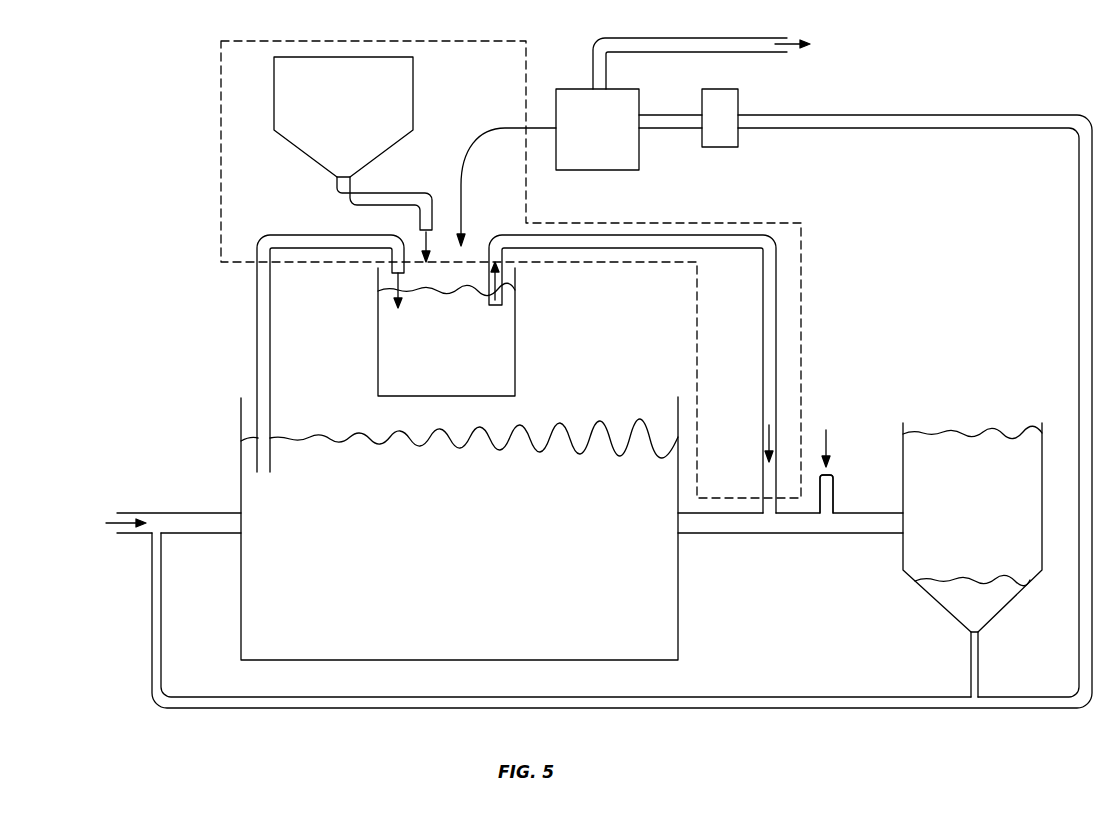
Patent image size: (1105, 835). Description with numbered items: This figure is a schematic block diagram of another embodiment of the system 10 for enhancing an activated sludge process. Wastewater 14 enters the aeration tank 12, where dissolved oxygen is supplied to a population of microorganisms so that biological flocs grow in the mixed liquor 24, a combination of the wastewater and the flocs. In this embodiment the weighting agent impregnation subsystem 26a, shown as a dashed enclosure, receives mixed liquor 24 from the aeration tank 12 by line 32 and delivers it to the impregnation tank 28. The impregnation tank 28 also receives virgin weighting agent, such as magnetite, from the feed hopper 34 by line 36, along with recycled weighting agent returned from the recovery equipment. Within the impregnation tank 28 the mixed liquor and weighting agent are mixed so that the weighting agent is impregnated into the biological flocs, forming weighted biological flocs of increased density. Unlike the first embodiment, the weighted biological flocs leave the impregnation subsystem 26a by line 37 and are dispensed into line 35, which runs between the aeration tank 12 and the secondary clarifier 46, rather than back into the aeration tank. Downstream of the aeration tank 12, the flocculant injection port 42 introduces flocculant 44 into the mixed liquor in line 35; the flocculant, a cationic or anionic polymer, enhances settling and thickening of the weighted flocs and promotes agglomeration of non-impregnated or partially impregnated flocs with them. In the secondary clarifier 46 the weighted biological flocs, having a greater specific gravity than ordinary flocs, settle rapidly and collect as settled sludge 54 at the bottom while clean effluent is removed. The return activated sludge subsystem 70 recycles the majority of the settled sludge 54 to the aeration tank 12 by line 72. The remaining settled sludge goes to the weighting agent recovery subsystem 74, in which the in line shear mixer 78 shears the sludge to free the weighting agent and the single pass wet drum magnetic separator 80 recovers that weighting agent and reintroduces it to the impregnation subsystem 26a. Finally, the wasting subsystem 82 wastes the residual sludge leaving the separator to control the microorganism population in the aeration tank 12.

The system for enhancing an activated sludge process 10 is at (1033, 76).
The aeration tank 12 is at (679, 573).
The wastewater 14 is at (135, 509).
The mixed liquor 24 is at (570, 438).
The weighting agent impregnation subsystem 26a is at (511, 269).
The impregnation tank 28 is at (446, 332).
The line 32 is at (272, 370).
The feed hopper 34 is at (343, 117).
The line 35 is at (798, 525).
The line 36 is at (403, 193).
The line 37 is at (768, 371).
The flocculant injection port 42 is at (829, 492).
The flocculant 44 is at (858, 424).
The secondary clarifier 46 is at (905, 555).
The settled sludge 54 is at (953, 605).
The return activated sludge subsystem 70 is at (950, 724).
The line 72 is at (815, 708).
The weighting agent recovery subsystem 74 is at (866, 38).
The in line shear mixer 78 is at (720, 118).
The single pass wet drum magnetic separator 80 is at (579, 167).
The wasting subsystem 82 is at (750, 52).